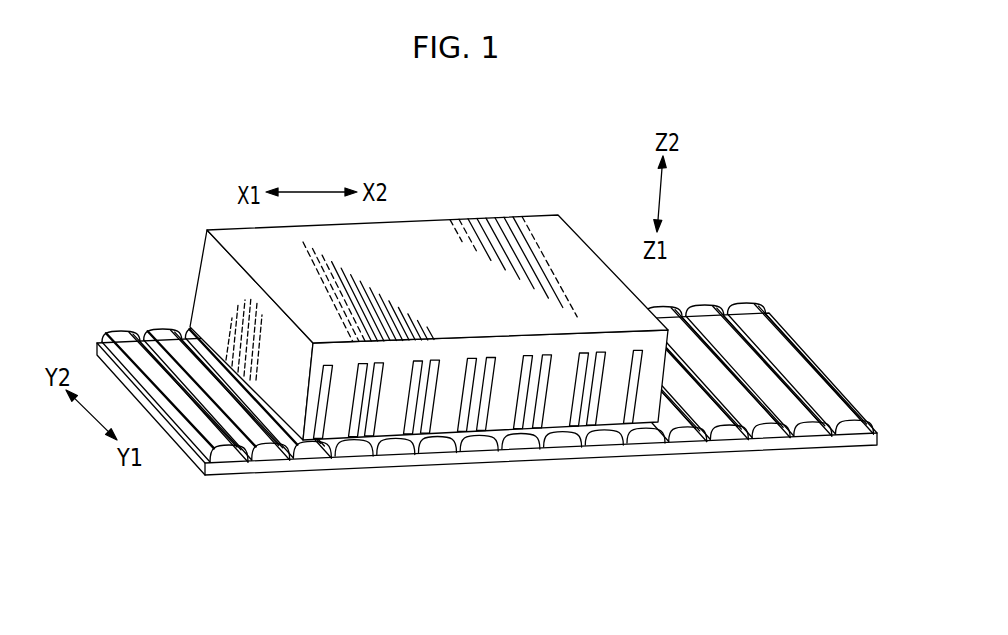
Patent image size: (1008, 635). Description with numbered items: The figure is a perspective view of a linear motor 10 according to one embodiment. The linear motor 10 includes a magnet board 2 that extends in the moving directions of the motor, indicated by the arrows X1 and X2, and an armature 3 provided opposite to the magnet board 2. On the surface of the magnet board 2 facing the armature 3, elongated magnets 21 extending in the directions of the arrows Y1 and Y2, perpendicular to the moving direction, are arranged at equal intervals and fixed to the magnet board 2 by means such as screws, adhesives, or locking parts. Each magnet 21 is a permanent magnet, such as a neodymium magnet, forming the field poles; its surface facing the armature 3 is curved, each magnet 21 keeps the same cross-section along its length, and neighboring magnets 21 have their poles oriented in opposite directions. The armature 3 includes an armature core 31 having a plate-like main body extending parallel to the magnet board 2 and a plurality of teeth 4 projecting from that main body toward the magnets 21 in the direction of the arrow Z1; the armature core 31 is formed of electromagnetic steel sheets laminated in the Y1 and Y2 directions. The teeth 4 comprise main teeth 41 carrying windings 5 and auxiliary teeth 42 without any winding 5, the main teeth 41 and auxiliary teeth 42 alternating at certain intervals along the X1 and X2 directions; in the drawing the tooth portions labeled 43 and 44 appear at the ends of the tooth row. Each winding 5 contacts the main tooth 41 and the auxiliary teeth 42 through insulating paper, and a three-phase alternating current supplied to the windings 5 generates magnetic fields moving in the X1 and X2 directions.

The linear motor 10 is at (171, 181).
The magnet board 2 is at (236, 490).
The magnet 21 is at (165, 335).
The armature 3 is at (429, 278).
The armature core 31 is at (567, 280).
The teeth 4 is at (479, 470).
The main tooth 41 is at (342, 438).
The auxiliary tooth 42 is at (468, 430).
The third terminal portion 43 is at (318, 440).
The fourth terminal portion 44 is at (646, 437).
The winding 5 is at (500, 474).